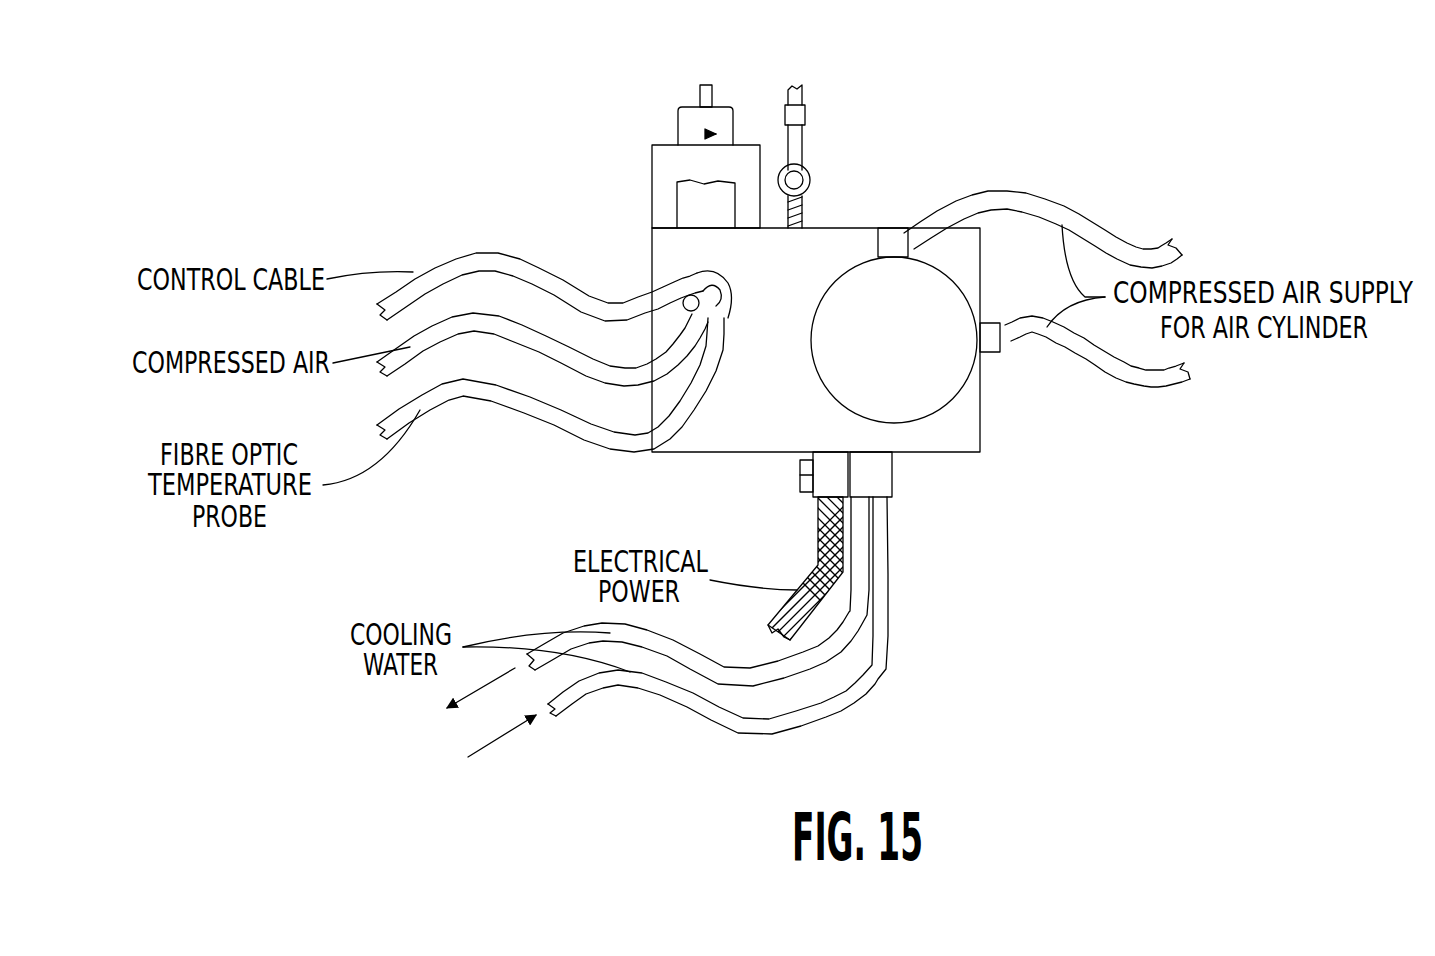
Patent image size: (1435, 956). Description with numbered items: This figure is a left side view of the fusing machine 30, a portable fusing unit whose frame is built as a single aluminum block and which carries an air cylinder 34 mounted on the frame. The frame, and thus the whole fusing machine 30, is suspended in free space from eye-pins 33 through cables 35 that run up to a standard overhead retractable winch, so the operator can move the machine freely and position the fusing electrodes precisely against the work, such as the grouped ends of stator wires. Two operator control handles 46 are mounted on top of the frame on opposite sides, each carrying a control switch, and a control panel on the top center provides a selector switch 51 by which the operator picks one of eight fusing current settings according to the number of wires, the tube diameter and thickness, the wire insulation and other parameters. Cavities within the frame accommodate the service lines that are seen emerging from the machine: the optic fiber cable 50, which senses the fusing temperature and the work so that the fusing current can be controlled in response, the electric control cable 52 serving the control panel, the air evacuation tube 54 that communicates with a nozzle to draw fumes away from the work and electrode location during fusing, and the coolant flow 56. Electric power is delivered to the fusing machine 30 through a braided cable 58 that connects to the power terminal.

The fusing machine 30 is at (945, 150).
The eye-pin 33 is at (810, 183).
The air cylinder 34 is at (935, 382).
The cable 35 is at (798, 140).
The operator control handle 46 is at (720, 117).
The optic fiber cable 50 is at (550, 403).
The selector switch 51 is at (705, 106).
The electric control cable 52 is at (557, 270).
The air evacuation tube 54 is at (557, 343).
The coolant flow 56 is at (585, 690).
The braided cable 58 is at (817, 540).